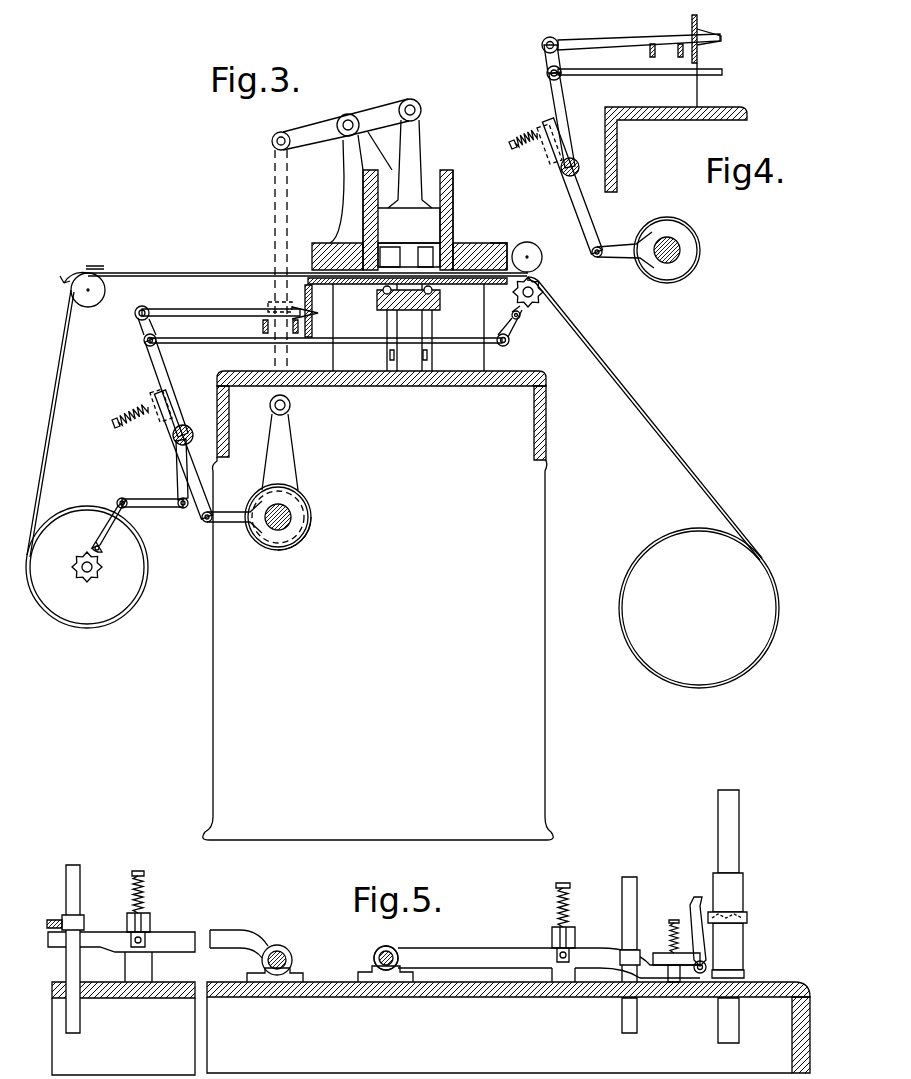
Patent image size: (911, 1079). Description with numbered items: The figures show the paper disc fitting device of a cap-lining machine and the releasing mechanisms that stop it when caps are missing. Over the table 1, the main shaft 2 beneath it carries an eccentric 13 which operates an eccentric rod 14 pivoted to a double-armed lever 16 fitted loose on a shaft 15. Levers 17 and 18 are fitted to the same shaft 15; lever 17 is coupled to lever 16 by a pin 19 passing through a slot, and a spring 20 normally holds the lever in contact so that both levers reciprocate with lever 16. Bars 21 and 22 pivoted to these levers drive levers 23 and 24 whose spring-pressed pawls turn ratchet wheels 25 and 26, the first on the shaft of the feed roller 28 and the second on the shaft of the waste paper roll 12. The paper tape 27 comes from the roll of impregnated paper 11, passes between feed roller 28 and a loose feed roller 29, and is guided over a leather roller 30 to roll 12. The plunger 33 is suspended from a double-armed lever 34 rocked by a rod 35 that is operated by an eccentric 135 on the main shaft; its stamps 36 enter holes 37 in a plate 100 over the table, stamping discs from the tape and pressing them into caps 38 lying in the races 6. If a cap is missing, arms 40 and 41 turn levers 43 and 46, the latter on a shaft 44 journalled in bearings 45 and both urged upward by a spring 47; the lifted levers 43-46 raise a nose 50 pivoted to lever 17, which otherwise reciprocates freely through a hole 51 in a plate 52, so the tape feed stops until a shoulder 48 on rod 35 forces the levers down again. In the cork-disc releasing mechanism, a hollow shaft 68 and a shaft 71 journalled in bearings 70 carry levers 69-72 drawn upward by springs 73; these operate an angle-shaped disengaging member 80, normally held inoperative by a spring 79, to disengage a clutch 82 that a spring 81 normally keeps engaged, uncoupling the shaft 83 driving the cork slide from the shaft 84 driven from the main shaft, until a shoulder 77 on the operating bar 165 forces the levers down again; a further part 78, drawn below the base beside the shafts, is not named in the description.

In FIG. 3, the table 1 is at (528, 375).
In FIG. 3, the main shaft 2 is at (268, 535).
In FIG. 4, the main shaft 2 is at (652, 262).
In FIG. 3, the cap feeding races 6 is at (441, 305).
In FIG. 3, the roll of impregnated paper 11 is at (682, 540).
In FIG. 3, the waste paper roll 12 is at (140, 586).
In FIG. 3, the eccentric 13 is at (303, 508).
In FIG. 4, the eccentric 13 is at (692, 272).
In FIG. 3, the eccentric rod 14 is at (240, 524).
In FIG. 4, the eccentric rod 14 is at (630, 245).
In FIG. 3, the shaft 15 is at (191, 428).
In FIG. 4, the shaft 15 is at (571, 162).
In FIG. 3, the double-armed lever 16 is at (172, 436).
In FIG. 4, the double-armed lever 16 is at (569, 178).
In FIG. 3, the lever 17 is at (172, 365).
In FIG. 4, the lever 17 is at (564, 100).
In FIG. 3, the lever 18 is at (177, 470).
In FIG. 3, the pin 19 is at (118, 423).
In FIG. 4, the pin 19 is at (519, 148).
In FIG. 3, the spring 20 is at (140, 403).
In FIG. 4, the spring 20 is at (536, 132).
In FIG. 3, the reciprocatable bar 21 is at (349, 342).
In FIG. 3, the reciprocatable bar 22 is at (170, 508).
In FIG. 3, the lever 23 is at (520, 325).
In FIG. 3, the lever 24 is at (104, 542).
In FIG. 3, the ratchet wheel 25 is at (545, 289).
In FIG. 3, the ratchet wheel 26 is at (86, 583).
In FIG. 3, the paper tape 27 is at (158, 274).
In FIG. 3, the feed roller 28 is at (493, 258).
In FIG. 3, the loose feed roller 29 is at (532, 239).
In FIG. 3, the leather roller 30 is at (104, 303).
In FIG. 3, the plunger 33 is at (454, 200).
In FIG. 3, the double-armed lever 34 is at (340, 116).
In FIG. 3, the rod 35 is at (289, 194).
In FIG. 5, the rod 35 is at (80, 890).
In FIG. 3, the stamps 36 is at (368, 250).
In FIG. 3, the holes 37 is at (411, 260).
In FIG. 3, the caps 38 is at (385, 292).
In FIG. 3, the double-armed lever arm 40 is at (390, 355).
In FIG. 3, the double-armed lever arm 41 is at (428, 355).
In FIG. 3, the lever 43 is at (296, 335).
In FIG. 5, the shaft 44 is at (292, 958).
In FIG. 5, the bearings 45 is at (256, 978).
In FIG. 3, the lever 46 is at (265, 335).
In FIG. 4, the lever 46 is at (650, 50).
In FIG. 5, the spring 47 is at (146, 895).
In FIG. 3, the shoulder 48 is at (272, 305).
In FIG. 5, the shoulder 48 is at (84, 921).
In FIG. 3, the nose 50 is at (200, 311).
In FIG. 4, the nose 50 is at (617, 44).
In FIG. 5, the nose 50 is at (52, 920).
In FIG. 3, the hole 51 is at (318, 313).
In FIG. 4, the hole 51 is at (698, 52).
In FIG. 3, the plate 52 is at (322, 311).
In FIG. 4, the plate 52 is at (698, 27).
In FIG. 5, the levers 43-46 is at (228, 934).
In FIG. 5, the hollow shaft 68 is at (383, 950).
In FIG. 5, the levers 69-72 is at (502, 948).
In FIG. 5, the bearings 70 is at (379, 964).
In FIG. 5, the shaft 71 is at (392, 950).
In FIG. 5, the springs 73 is at (558, 905).
In FIG. 5, the shoulder 77 is at (619, 953).
In FIG. 5, the rod 78 is at (622, 1015).
In FIG. 5, the spring 79 is at (670, 928).
In FIG. 5, the disengaging member 80 is at (696, 906).
In FIG. 5, the spring 81 is at (745, 970).
In FIG. 5, the clutch 82 is at (748, 915).
In FIG. 5, the shaft 83 is at (718, 845).
In FIG. 5, the shaft 84 is at (739, 1015).
In FIG. 3, the plate 100 is at (320, 255).
In FIG. 3, the eccentric 135 is at (301, 556).
In FIG. 5, the operating bar 165 is at (622, 890).